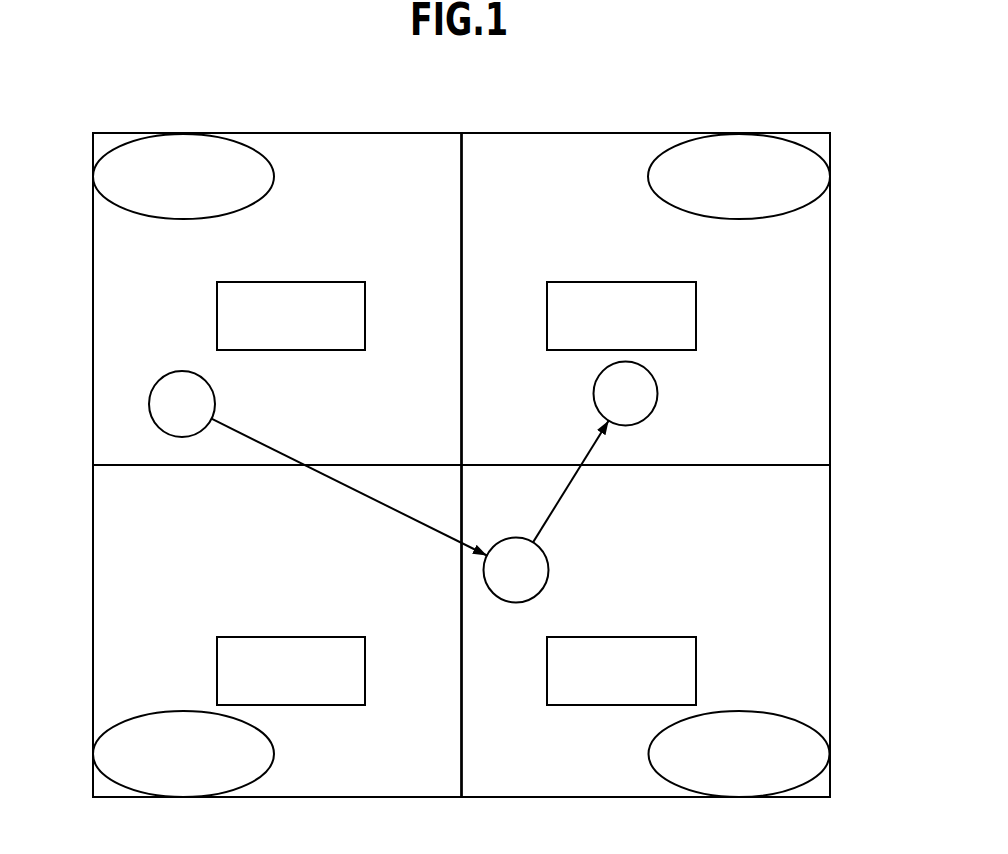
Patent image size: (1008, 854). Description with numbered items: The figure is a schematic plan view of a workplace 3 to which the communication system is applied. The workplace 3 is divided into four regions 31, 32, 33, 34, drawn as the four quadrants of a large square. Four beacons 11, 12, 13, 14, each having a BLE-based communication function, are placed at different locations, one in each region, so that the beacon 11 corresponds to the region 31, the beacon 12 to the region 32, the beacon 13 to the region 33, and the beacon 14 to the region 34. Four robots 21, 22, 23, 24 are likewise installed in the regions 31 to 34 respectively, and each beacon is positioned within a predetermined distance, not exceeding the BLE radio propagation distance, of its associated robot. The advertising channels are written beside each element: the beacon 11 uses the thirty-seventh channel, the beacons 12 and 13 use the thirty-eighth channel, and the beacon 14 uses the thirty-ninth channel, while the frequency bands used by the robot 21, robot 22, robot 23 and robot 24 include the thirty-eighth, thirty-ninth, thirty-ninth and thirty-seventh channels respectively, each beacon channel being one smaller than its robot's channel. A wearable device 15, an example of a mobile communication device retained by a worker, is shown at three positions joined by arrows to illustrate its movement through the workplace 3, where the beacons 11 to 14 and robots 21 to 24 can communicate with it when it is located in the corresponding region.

The workplace 3 is at (803, 448).
The beacon 11 is at (274, 177).
The beacon 12 is at (647, 177).
The beacon 13 is at (274, 753).
The beacon 14 is at (648, 753).
The wearable device 15 is at (215, 404).
The robot 21 is at (300, 282).
The robot 22 is at (630, 282).
The robot 23 is at (300, 637).
The robot 24 is at (630, 637).
The region 31 is at (103, 297).
The region 32 is at (820, 298).
The region 33 is at (103, 630).
The region 34 is at (820, 628).